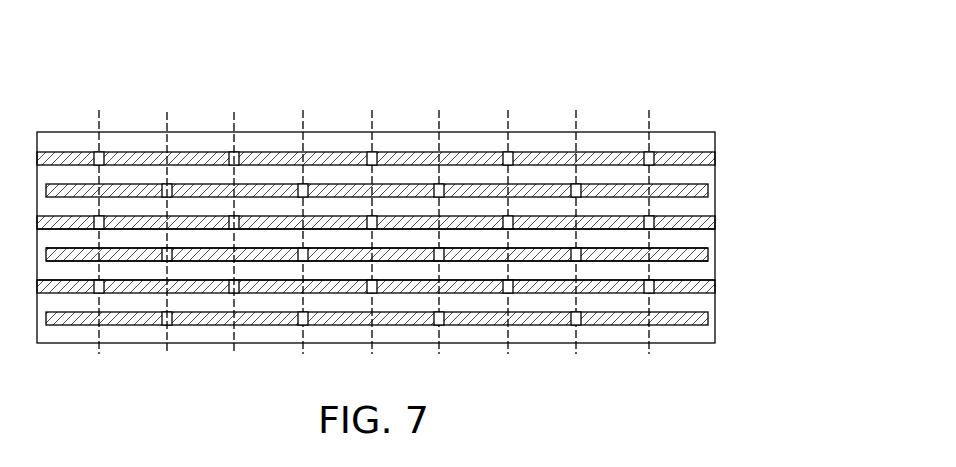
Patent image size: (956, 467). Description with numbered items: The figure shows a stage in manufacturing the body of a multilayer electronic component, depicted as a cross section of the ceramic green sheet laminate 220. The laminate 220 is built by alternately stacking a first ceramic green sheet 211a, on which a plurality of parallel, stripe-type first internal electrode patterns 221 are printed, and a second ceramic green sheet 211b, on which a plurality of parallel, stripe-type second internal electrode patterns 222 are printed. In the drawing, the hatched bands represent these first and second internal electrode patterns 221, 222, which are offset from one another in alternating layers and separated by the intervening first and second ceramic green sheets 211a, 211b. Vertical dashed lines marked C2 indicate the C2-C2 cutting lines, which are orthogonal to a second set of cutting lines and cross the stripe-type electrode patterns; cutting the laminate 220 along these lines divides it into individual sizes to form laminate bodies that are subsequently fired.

The ceramic green sheet laminate 220 is at (158, 40).
The second internal electrode pattern 222 is at (698, 221).
The first internal electrode pattern 221 is at (703, 257).
The second ceramic green sheet 211b is at (708, 237).
The first ceramic green sheet 211a is at (708, 270).
The C2-C2 cutting line C2 is at (198, 234).